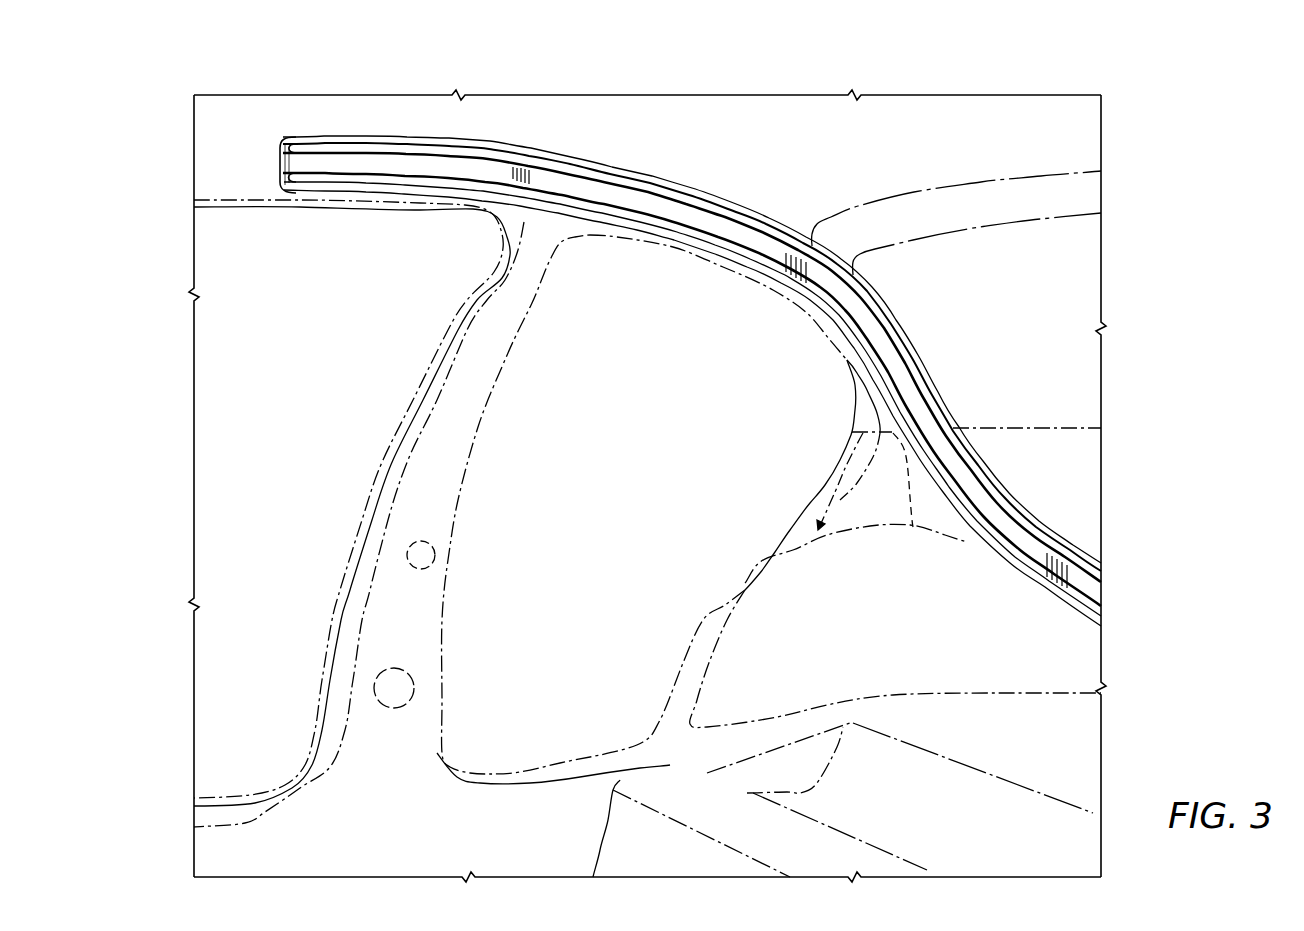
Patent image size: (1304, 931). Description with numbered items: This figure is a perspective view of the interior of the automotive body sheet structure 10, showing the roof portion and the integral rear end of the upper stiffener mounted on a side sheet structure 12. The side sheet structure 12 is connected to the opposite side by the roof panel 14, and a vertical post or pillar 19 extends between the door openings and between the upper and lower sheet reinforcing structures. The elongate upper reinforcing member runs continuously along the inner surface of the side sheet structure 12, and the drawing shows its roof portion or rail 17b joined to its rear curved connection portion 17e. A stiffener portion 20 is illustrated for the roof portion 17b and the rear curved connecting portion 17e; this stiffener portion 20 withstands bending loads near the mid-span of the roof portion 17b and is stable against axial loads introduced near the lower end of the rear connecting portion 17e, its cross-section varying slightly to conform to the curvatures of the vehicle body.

The automotive body sheet structure 10 is at (627, 81).
The side sheet structure 12 is at (690, 336).
The roof panel 14 is at (896, 126).
The roof portion or rail 17b is at (460, 187).
The rear curved connection portion 17e is at (935, 427).
The vertical post or pillar 19 is at (457, 462).
The stiffener portion 20 is at (698, 252).